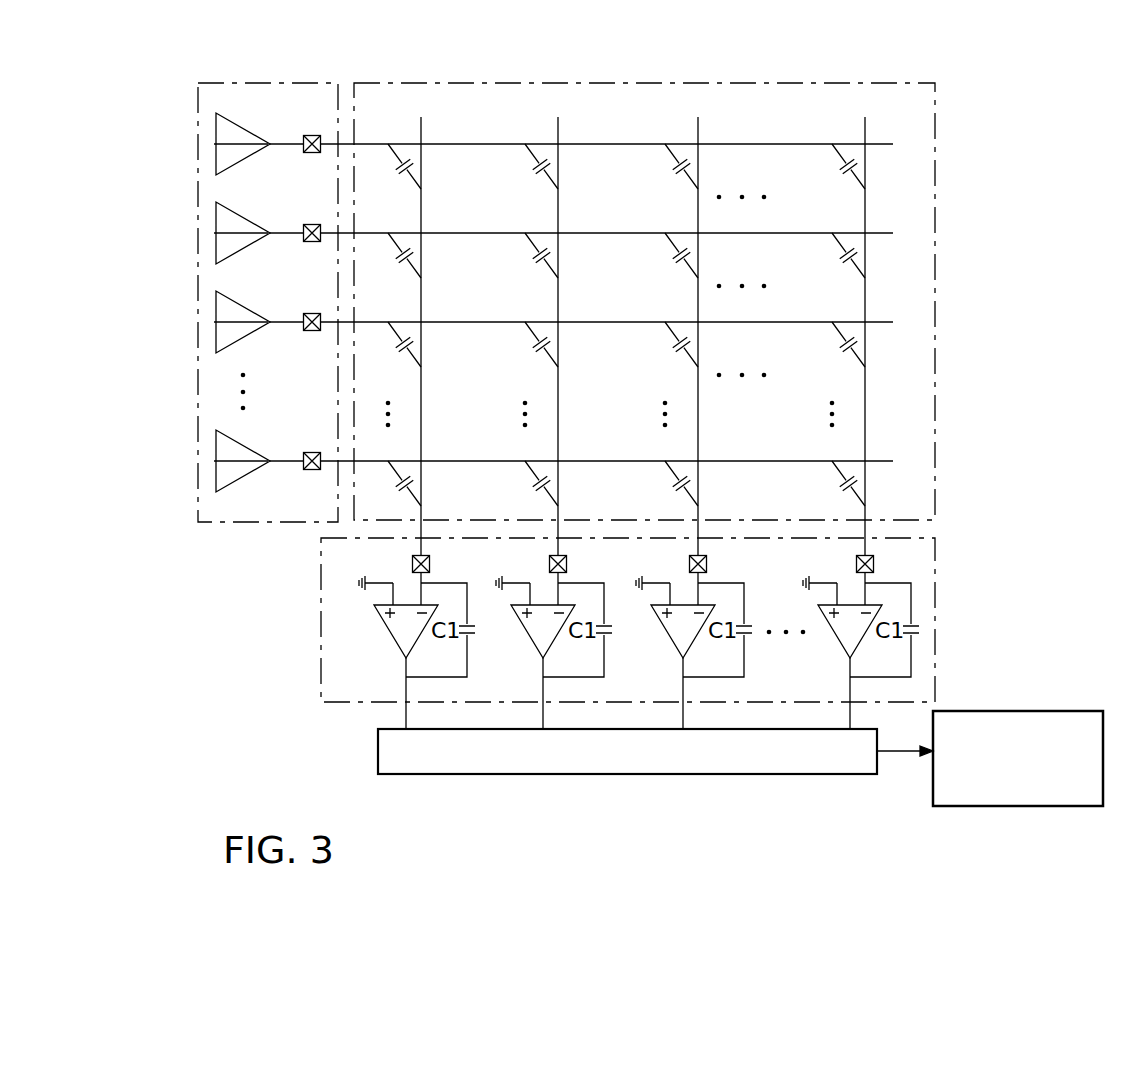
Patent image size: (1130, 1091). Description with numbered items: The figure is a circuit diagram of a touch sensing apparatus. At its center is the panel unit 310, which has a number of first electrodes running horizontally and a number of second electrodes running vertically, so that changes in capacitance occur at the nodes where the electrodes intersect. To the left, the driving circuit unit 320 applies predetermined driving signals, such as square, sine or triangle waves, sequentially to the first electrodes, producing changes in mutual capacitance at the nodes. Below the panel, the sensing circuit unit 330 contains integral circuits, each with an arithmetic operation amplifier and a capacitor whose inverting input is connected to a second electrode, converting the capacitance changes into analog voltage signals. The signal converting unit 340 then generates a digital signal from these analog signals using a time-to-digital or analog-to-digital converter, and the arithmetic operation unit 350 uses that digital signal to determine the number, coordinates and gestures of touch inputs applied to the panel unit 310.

The panel unit 310 is at (664, 83).
The driving circuit unit 320 is at (265, 83).
The sensing circuit unit 330 is at (321, 622).
The signal converting unit 340 is at (628, 776).
The arithmetic operation unit 350 is at (1025, 808).